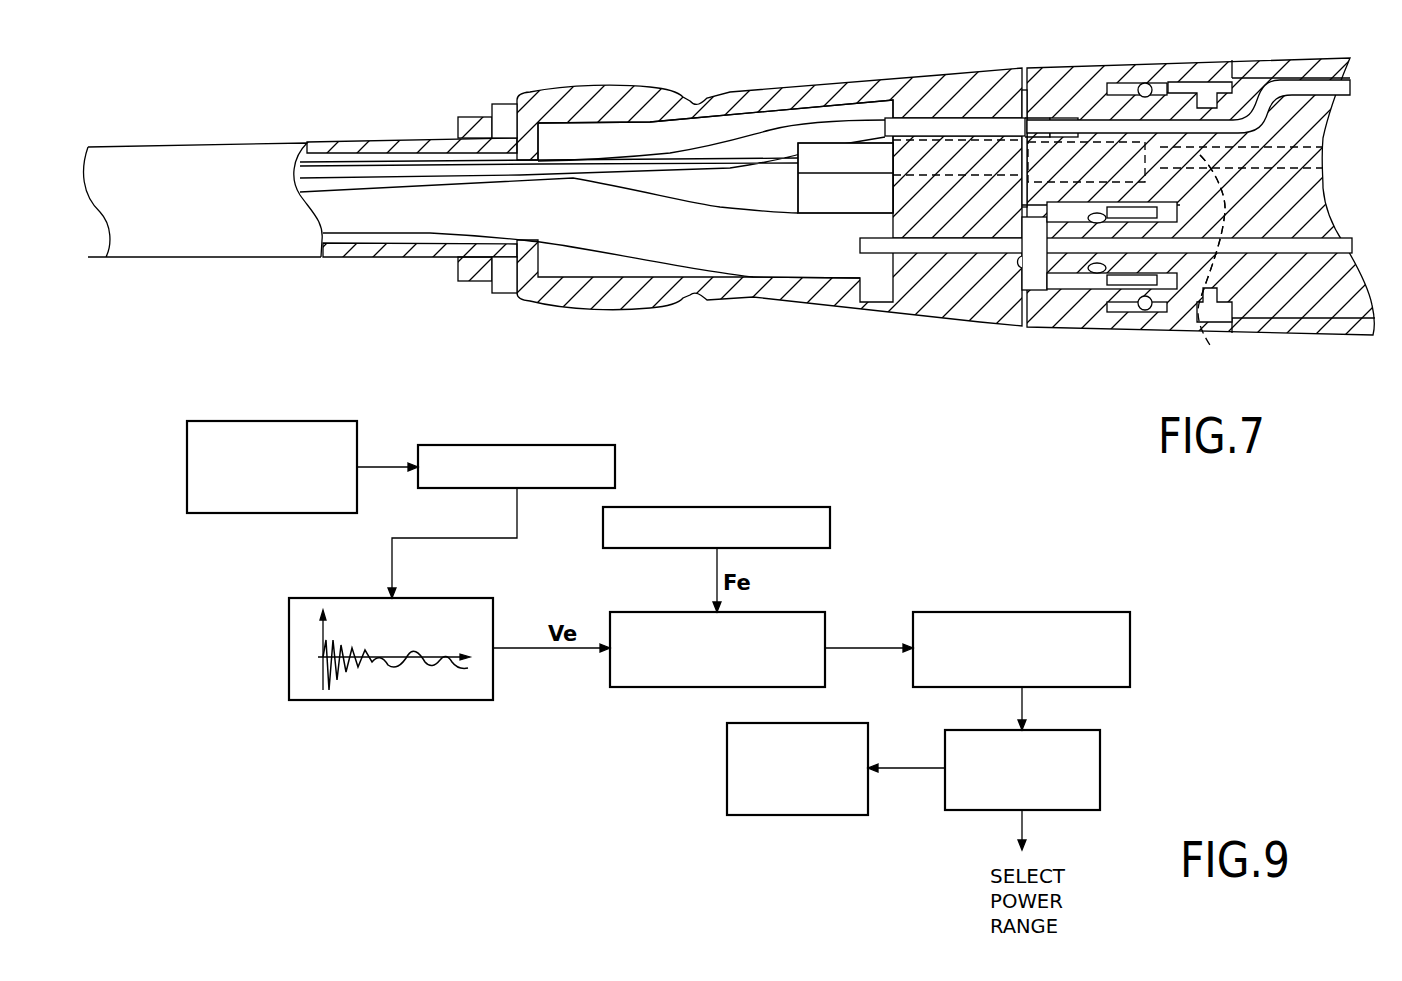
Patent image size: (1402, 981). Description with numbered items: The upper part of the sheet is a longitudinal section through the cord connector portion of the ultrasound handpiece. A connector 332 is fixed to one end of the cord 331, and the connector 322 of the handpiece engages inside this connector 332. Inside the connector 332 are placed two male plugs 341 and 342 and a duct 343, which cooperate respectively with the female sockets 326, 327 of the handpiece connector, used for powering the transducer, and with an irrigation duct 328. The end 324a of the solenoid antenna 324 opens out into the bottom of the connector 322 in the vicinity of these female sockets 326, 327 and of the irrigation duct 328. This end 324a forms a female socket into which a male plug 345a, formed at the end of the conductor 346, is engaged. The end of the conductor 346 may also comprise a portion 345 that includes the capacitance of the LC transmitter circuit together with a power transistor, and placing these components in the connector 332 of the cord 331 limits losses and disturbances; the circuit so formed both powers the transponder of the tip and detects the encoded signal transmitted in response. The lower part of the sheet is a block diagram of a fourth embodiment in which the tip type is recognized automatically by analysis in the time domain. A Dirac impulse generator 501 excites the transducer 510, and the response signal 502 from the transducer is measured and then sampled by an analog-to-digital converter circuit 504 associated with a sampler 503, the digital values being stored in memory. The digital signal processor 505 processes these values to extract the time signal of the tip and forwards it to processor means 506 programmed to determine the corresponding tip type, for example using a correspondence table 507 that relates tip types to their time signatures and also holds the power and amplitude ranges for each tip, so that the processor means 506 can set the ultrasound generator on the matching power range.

In FIG. 7, the cord 331 is at (223, 162).
In FIG. 7, the connector 332 is at (868, 85).
In FIG. 7, the conductor 346 is at (733, 137).
In FIG. 7, the portion 345 is at (928, 125).
In FIG. 7, the male plug 345a is at (1040, 120).
In FIG. 7, the end of the solenoid antenna 324a is at (1068, 117).
In FIG. 7, the connector 322 is at (1124, 119).
In FIG. 7, the solenoid antenna 324 is at (1168, 116).
In FIG. 7, the male plug 341 is at (810, 165).
In FIG. 7, the male plug 342 is at (845, 178).
In FIG. 7, the duct 343 is at (1022, 262).
In FIG. 7, the irrigation duct 328 is at (1078, 280).
In FIG. 7, the female socket 326 is at (1217, 267).
In FIG. 7, the female socket 327 is at (1212, 227).
In FIG. 9, the Dirac impulse generator 501 is at (275, 421).
In FIG. 9, the transducer 510 is at (520, 445).
In FIG. 9, the response signal 502 is at (343, 598).
In FIG. 9, the sampler 503 is at (720, 507).
In FIG. 9, the analog-to-digital converter circuit 504 is at (648, 612).
In FIG. 9, the digital signal processor 505 is at (1025, 612).
In FIG. 9, the processor means 506 is at (1100, 768).
In FIG. 9, the correspondance table 507 is at (727, 768).